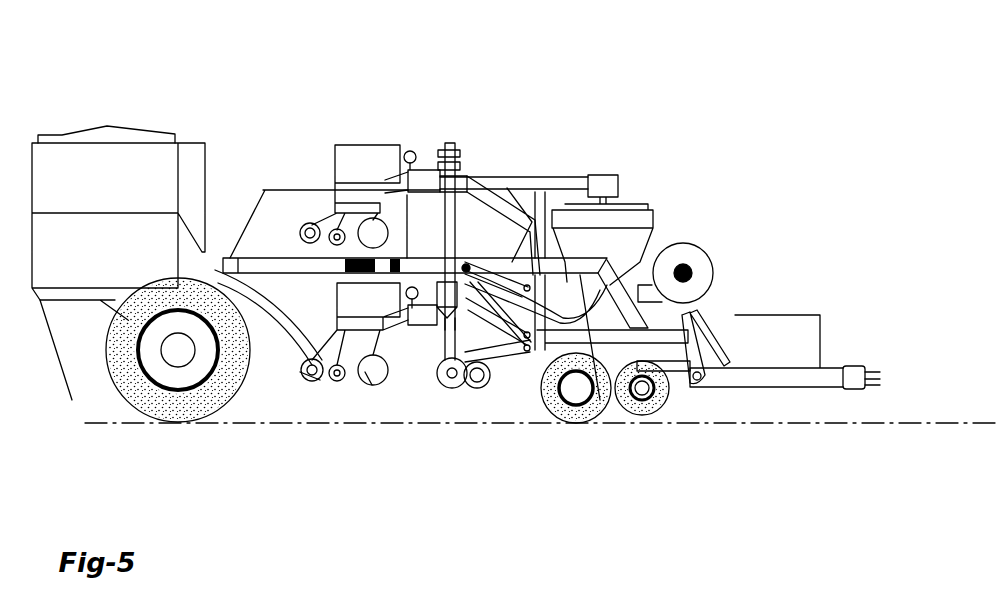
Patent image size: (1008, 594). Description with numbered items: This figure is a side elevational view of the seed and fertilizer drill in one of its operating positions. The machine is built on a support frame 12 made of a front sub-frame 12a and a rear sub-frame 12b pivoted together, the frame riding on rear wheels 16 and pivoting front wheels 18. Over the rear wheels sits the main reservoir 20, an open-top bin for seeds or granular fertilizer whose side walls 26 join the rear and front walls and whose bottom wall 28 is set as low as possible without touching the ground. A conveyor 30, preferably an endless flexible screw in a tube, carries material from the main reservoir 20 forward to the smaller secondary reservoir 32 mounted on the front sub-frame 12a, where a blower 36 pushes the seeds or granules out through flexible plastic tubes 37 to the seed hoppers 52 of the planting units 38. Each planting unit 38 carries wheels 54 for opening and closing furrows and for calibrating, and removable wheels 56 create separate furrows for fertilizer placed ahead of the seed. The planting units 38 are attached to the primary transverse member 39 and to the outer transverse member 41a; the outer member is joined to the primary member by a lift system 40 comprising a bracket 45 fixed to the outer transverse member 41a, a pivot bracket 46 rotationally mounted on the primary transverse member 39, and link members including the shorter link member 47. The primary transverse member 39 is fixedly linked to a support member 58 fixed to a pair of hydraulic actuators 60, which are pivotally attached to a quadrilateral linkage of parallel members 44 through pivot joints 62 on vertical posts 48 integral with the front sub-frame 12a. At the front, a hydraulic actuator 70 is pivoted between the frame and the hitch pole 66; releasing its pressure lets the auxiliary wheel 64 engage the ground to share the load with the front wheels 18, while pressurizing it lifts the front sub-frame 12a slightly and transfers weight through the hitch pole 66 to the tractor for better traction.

The support frame 12 is at (277, 185).
The front sub-frame 12a is at (539, 275).
The rear sub-frame 12b is at (275, 257).
The rear wheels 16 is at (160, 403).
The front wheels 18 is at (576, 423).
The main reservoir 20 is at (88, 125).
The side walls 26 is at (121, 187).
The bottom wall 28 is at (72, 400).
The conveyor 30 is at (260, 392).
The secondary reservoir 32 is at (660, 207).
The blower 36 is at (692, 252).
The flexible plastic tubes 37 is at (600, 400).
The planting unit 38 is at (355, 143).
The primary transverse member 39 is at (423, 337).
The lift system 40 is at (458, 142).
The outer transverse member 41a is at (427, 160).
The parallel members 44 is at (530, 212).
The bracket 45 is at (439, 150).
The pivot bracket 46 is at (447, 335).
The link member 47 is at (461, 165).
The vertical posts 48 is at (545, 345).
The seed hopper 52 is at (378, 311).
The wheels 54 is at (372, 388).
The removable wheels 56 is at (465, 393).
The support member 58 is at (492, 388).
The hydraulic actuators 60 is at (518, 340).
The pivot joints 62 is at (524, 278).
The auxiliary wheel 64 is at (643, 400).
The hitch pole 66 is at (766, 388).
The hydraulic actuator 70 is at (723, 317).